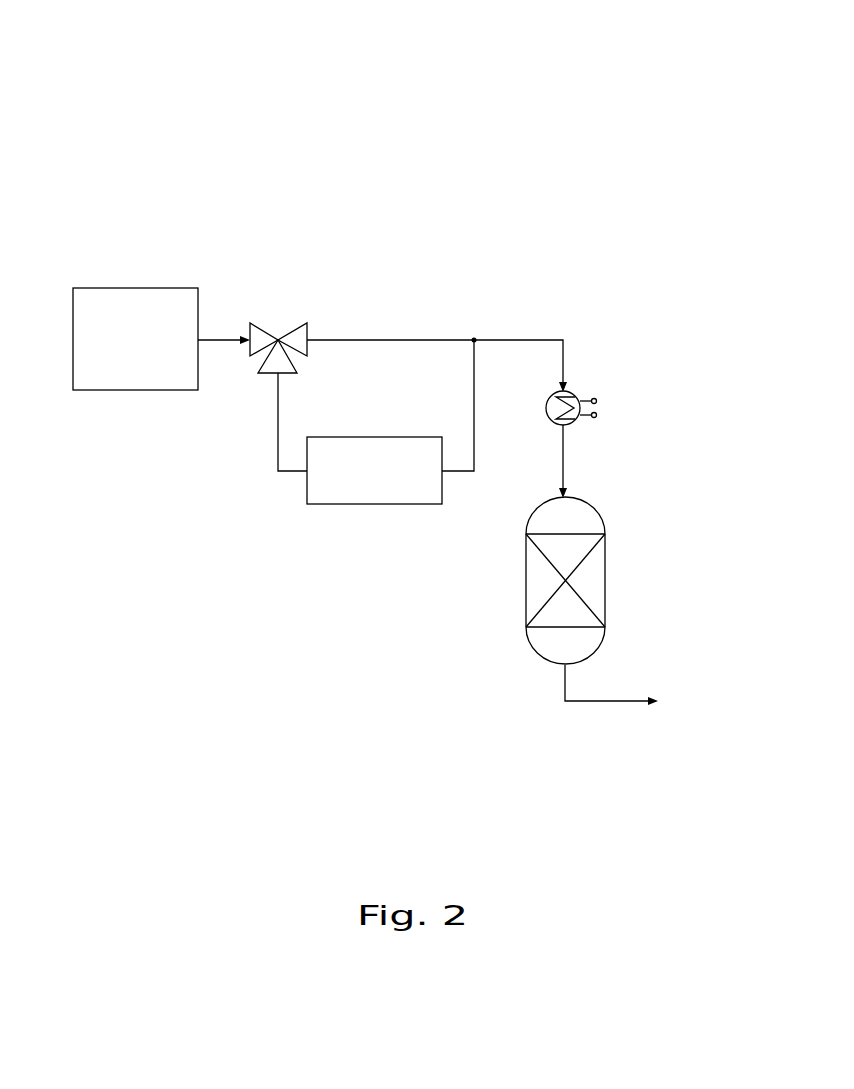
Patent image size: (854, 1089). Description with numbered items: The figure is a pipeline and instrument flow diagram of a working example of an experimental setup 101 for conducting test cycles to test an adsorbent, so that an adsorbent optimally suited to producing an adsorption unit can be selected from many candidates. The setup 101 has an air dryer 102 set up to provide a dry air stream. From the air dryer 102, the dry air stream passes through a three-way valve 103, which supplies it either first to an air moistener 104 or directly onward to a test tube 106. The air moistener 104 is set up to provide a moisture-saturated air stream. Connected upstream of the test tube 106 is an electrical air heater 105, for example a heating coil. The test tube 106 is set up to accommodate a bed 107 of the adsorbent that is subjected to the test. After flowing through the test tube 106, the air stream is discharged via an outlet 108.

The experimental setup 101 is at (355, 102).
The air dryer 102 is at (137, 288).
The three-way valve 103 is at (293, 325).
The air moistener 104 is at (307, 492).
The electrical air heater 105 is at (597, 410).
The test tube 106 is at (498, 581).
The bed 107 is at (533, 598).
The outlet 108 is at (653, 698).